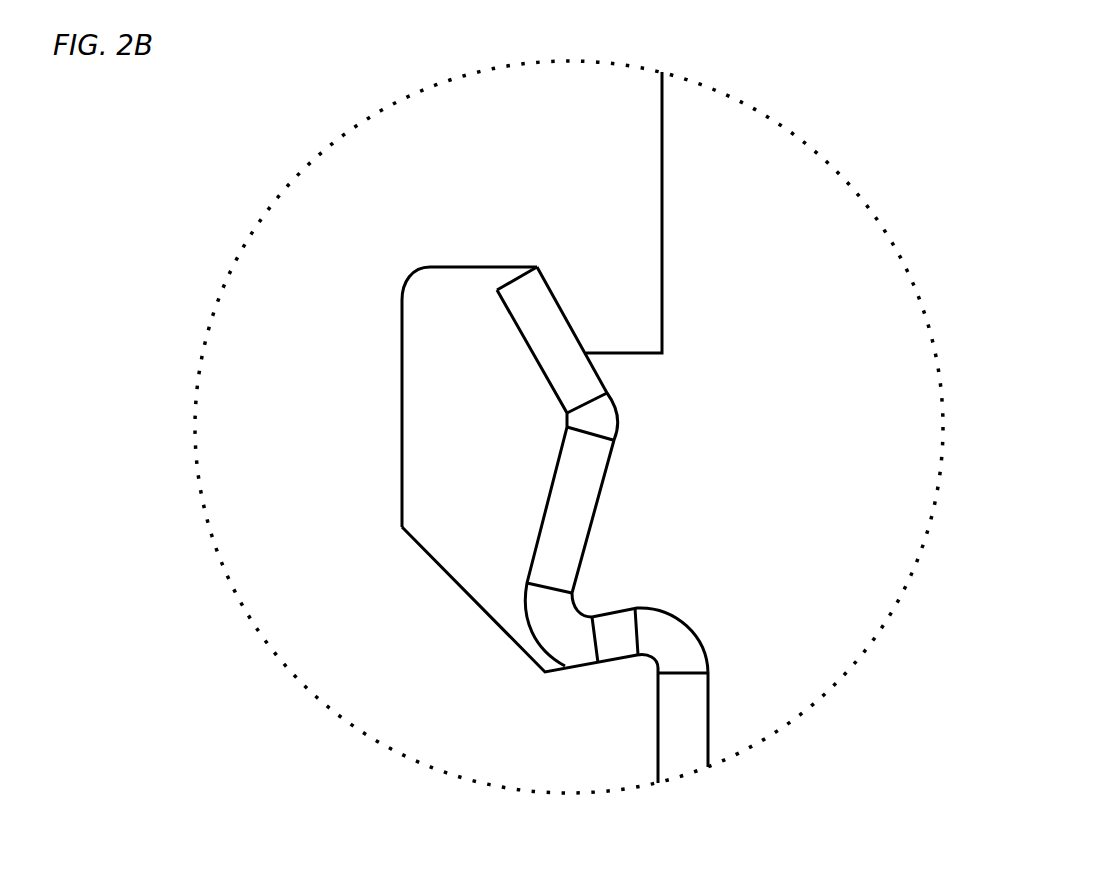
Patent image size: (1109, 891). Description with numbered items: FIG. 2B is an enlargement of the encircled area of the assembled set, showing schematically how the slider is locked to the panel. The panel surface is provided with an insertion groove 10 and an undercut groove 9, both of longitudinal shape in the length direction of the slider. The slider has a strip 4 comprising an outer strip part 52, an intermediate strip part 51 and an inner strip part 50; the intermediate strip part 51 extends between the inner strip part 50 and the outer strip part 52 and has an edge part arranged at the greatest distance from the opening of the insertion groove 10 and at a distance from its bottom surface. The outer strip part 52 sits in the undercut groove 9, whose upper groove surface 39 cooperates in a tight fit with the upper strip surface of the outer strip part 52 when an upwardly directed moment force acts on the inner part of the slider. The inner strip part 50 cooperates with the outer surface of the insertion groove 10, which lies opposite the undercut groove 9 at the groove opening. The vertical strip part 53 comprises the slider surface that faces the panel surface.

The strip 4 is at (587, 497).
The undercut groove 9 is at (483, 282).
The insertion groove 10 is at (647, 465).
The upper groove surface 39 is at (521, 269).
The inner strip part 50 is at (609, 623).
The intermediate strip part 51 is at (571, 465).
The outer strip part 52 is at (556, 331).
The vertical strip part 53 is at (683, 720).